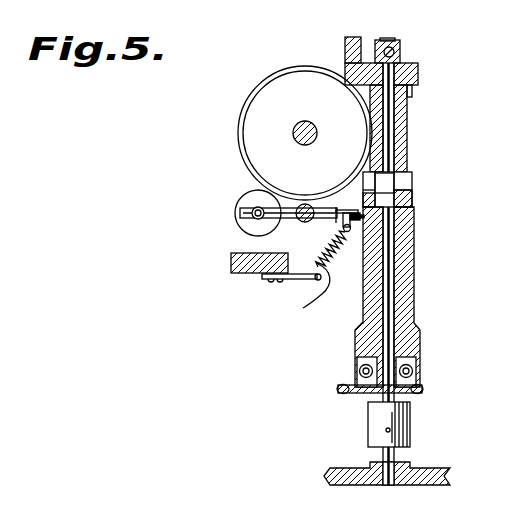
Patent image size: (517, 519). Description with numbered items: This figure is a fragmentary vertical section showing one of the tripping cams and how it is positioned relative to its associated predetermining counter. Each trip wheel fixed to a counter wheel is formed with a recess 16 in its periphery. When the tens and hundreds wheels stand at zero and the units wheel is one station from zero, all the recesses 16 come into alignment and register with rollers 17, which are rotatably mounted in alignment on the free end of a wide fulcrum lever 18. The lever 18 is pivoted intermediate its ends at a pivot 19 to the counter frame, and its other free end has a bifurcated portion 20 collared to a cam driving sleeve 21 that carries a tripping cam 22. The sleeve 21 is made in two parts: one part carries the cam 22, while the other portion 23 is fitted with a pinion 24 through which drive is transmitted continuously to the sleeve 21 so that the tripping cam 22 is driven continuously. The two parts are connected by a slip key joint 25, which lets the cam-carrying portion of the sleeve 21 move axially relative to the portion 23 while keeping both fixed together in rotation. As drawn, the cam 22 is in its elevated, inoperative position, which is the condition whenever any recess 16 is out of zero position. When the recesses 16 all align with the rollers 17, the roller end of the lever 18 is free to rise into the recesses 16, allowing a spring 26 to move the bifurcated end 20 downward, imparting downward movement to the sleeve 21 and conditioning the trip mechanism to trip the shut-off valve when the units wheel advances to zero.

The recess 16 is at (366, 107).
The rollers 17 is at (246, 206).
The fulcrum lever 18 is at (325, 222).
The pivot 19 is at (304, 223).
The bifurcated portion 20 is at (355, 233).
The cam driving sleeve 21 is at (415, 232).
The tripping cam 22 is at (340, 390).
The sleeve portion 23 is at (402, 158).
The pinion 24 is at (412, 91).
The slip key joint 25 is at (413, 192).
The spring 26 is at (303, 308).